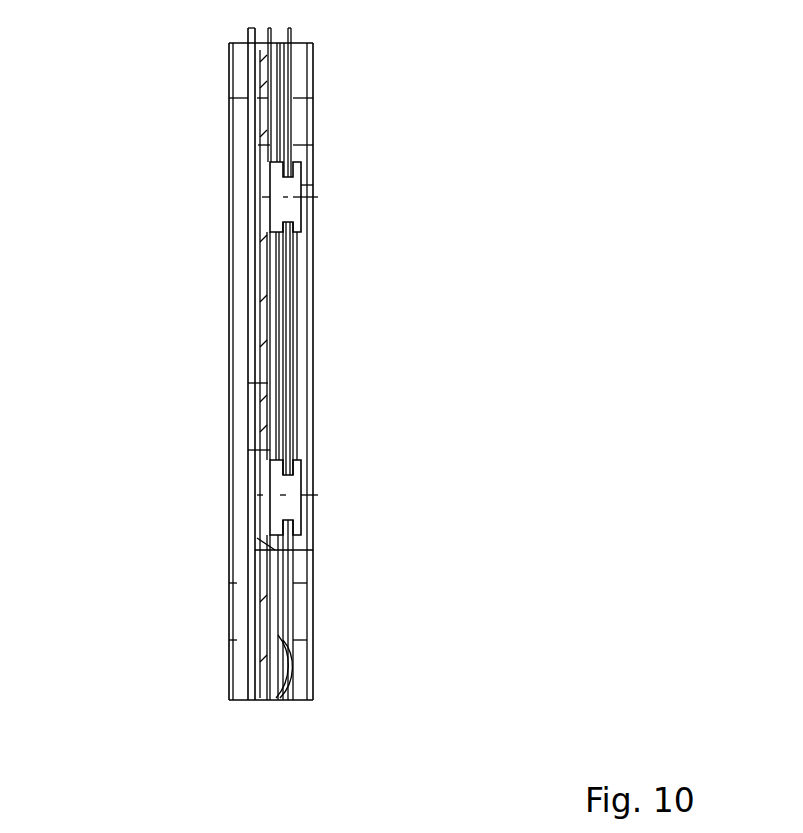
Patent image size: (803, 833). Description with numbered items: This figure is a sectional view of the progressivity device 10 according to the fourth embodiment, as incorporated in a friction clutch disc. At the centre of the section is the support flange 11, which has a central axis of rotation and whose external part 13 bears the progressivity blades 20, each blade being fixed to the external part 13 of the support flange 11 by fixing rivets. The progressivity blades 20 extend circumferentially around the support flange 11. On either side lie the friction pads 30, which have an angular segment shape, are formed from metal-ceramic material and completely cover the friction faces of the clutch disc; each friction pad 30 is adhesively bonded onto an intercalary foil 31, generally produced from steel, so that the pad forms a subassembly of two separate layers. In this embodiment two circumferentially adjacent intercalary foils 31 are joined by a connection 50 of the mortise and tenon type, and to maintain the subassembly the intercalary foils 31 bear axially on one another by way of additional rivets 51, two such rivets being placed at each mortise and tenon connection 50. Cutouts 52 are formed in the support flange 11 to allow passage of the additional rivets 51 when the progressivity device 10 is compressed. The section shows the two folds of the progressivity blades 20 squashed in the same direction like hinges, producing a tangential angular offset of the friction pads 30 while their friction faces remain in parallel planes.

The progressivity device 10 is at (417, 75).
The support flange 11 is at (257, 703).
The external part 13 is at (289, 419).
The progressivity blades 20 is at (313, 145).
The friction pads 30 is at (223, 622).
The intercalary foil 31 is at (312, 625).
The mortise and tenon connection 50 is at (293, 295).
The additional rivets 51 is at (313, 185).
The cutouts 52 is at (293, 553).